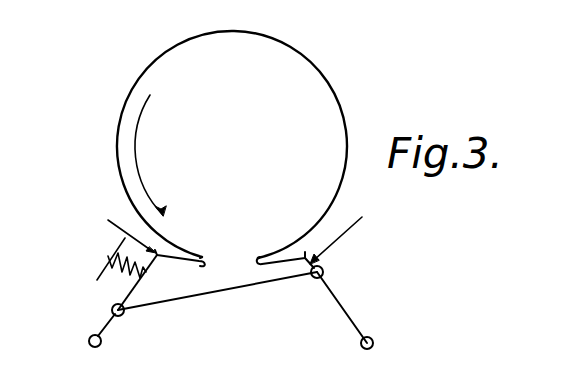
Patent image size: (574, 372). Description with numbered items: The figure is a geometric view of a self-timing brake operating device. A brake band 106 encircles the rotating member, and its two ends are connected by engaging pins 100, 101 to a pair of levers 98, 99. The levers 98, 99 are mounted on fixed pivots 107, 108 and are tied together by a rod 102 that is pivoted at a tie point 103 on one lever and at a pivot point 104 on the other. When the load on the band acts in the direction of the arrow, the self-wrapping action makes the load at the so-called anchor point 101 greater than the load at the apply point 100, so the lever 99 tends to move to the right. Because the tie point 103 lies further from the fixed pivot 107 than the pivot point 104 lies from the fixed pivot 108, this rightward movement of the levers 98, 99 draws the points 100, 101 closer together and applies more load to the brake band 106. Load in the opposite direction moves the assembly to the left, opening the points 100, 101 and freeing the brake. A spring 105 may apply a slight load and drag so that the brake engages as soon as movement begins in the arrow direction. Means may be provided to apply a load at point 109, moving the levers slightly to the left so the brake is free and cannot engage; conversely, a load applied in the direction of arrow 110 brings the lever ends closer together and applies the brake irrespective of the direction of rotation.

The lever 98 is at (127, 297).
The lever 99 is at (342, 307).
The engaging pin 100 is at (177, 260).
The engaging pin 101 is at (284, 263).
The rod 102 is at (225, 292).
The tie point 103 is at (323, 268).
The pivot point 104 is at (112, 314).
The spring 105 is at (107, 256).
The brake band 106 is at (305, 57).
The fixed pivot 107 is at (373, 344).
The fixed pivot 108 is at (101, 341).
The point 109 is at (353, 224).
The arrow 110 is at (108, 220).